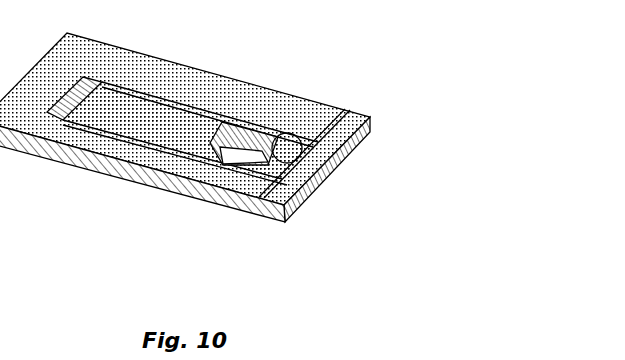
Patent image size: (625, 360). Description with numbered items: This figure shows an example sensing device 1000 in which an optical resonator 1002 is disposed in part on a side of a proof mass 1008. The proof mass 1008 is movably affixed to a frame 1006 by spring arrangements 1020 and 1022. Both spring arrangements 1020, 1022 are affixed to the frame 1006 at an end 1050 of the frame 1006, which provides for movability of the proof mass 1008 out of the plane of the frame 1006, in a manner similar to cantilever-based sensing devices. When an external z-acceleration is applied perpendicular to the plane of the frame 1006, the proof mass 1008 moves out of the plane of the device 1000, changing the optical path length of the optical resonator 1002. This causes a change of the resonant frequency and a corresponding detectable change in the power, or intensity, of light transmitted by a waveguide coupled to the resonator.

The sensing device 1000 is at (184, 59).
The optical resonator 1002 is at (272, 167).
The frame 1006 is at (163, 187).
The proof mass 1008 is at (120, 103).
The spring arrangement 1020 is at (115, 132).
The spring arrangement 1022 is at (133, 88).
The end of the frame 1050 is at (292, 152).